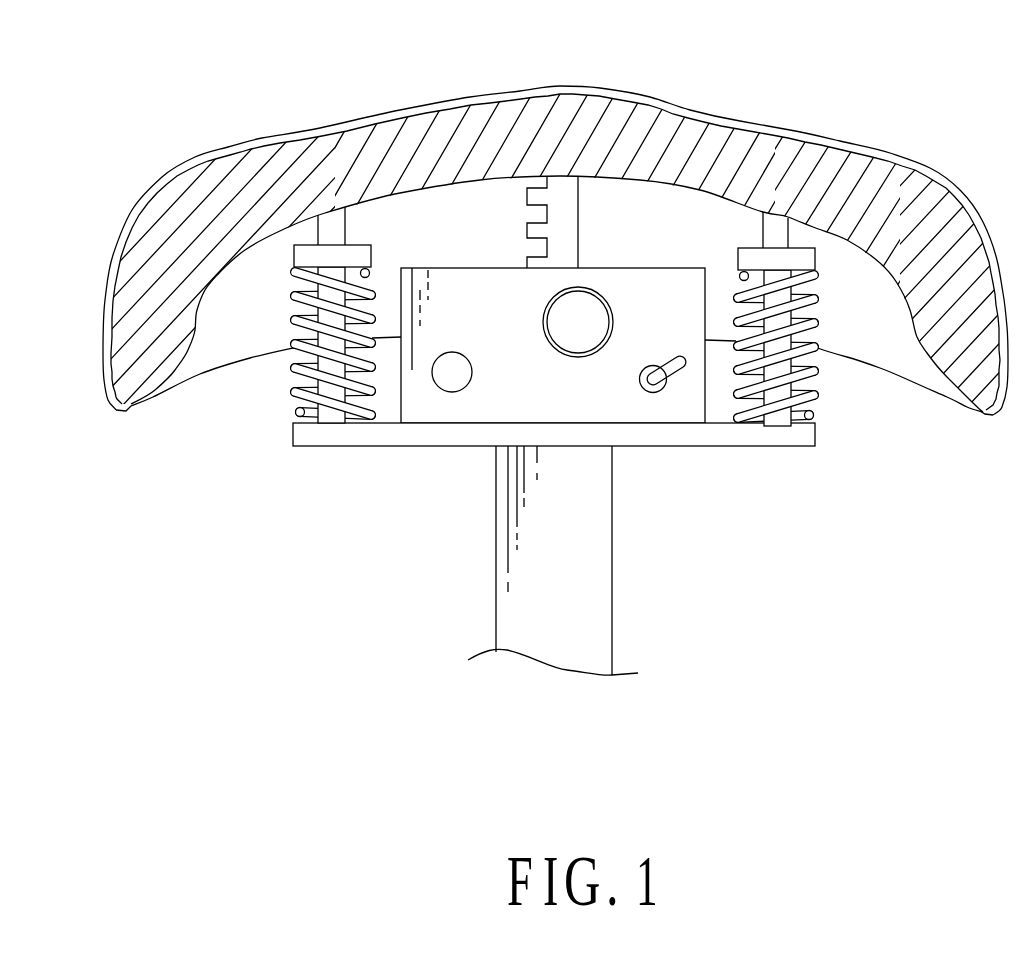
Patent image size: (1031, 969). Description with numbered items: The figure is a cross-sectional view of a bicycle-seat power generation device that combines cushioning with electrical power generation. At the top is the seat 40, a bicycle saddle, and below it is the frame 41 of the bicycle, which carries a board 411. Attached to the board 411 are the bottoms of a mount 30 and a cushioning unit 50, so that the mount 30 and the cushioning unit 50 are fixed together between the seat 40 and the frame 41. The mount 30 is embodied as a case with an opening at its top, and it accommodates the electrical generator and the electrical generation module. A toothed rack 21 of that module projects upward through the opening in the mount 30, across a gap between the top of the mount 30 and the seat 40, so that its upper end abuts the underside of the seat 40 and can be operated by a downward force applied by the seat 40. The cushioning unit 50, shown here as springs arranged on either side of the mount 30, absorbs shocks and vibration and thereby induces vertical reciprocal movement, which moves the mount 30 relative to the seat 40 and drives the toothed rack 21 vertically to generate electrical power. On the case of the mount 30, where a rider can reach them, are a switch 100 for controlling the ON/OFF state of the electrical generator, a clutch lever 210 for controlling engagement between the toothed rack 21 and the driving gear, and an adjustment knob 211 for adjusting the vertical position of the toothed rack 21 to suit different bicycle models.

The toothed rack 21 is at (555, 203).
The seat 40 is at (641, 123).
The mount 30 is at (490, 300).
The adjustment knob 211 is at (590, 320).
The cushioning unit 50 is at (297, 367).
The switch 100 is at (450, 370).
The board 411 is at (480, 437).
The clutch lever 210 is at (678, 378).
The frame 41 is at (593, 542).